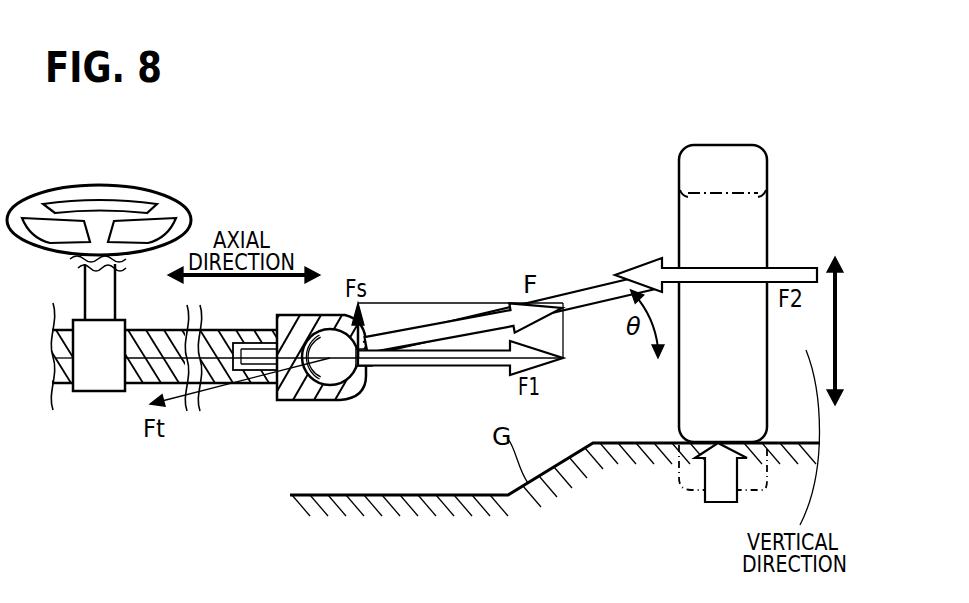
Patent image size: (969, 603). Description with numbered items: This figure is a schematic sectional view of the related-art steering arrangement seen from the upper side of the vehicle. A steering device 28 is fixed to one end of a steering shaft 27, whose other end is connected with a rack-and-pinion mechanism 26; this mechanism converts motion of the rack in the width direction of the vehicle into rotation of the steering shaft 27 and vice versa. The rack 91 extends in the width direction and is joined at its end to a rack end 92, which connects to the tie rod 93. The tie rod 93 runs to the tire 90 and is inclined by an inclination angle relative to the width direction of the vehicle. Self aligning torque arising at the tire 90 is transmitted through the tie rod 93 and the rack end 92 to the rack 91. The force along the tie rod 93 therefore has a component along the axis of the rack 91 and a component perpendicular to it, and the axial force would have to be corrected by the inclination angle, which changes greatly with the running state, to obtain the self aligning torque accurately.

The rack-and-pinion mechanism 26 is at (100, 383).
The steering shaft 27 is at (85, 289).
The steering device 28 is at (186, 214).
The tire 90 is at (735, 331).
The rack 91 is at (222, 373).
The rack end 92 is at (322, 402).
The tie rod 93 is at (610, 291).